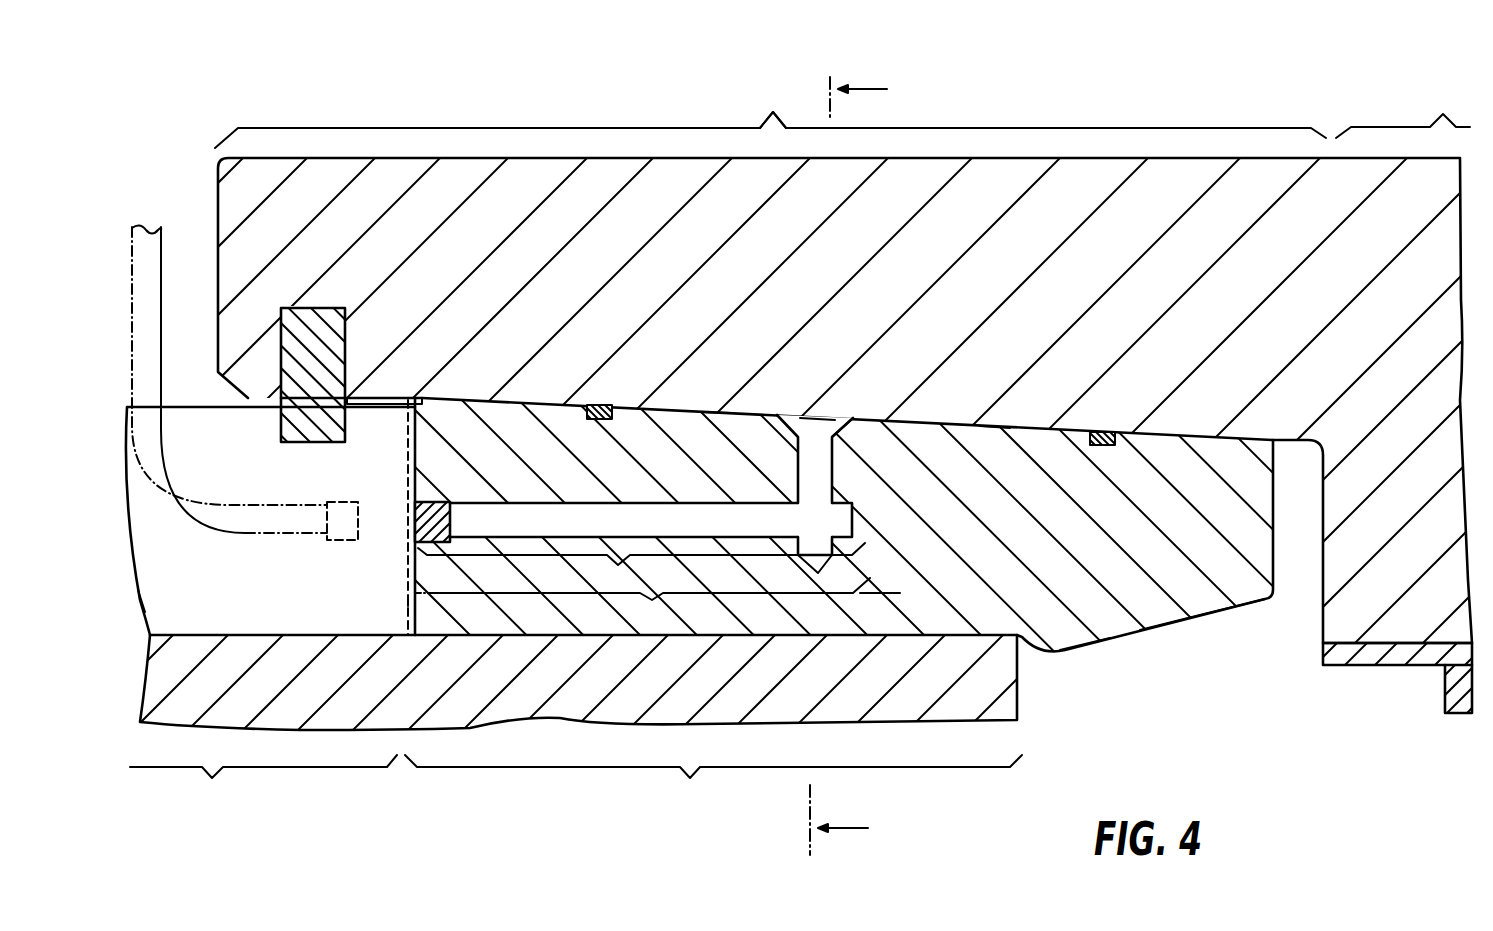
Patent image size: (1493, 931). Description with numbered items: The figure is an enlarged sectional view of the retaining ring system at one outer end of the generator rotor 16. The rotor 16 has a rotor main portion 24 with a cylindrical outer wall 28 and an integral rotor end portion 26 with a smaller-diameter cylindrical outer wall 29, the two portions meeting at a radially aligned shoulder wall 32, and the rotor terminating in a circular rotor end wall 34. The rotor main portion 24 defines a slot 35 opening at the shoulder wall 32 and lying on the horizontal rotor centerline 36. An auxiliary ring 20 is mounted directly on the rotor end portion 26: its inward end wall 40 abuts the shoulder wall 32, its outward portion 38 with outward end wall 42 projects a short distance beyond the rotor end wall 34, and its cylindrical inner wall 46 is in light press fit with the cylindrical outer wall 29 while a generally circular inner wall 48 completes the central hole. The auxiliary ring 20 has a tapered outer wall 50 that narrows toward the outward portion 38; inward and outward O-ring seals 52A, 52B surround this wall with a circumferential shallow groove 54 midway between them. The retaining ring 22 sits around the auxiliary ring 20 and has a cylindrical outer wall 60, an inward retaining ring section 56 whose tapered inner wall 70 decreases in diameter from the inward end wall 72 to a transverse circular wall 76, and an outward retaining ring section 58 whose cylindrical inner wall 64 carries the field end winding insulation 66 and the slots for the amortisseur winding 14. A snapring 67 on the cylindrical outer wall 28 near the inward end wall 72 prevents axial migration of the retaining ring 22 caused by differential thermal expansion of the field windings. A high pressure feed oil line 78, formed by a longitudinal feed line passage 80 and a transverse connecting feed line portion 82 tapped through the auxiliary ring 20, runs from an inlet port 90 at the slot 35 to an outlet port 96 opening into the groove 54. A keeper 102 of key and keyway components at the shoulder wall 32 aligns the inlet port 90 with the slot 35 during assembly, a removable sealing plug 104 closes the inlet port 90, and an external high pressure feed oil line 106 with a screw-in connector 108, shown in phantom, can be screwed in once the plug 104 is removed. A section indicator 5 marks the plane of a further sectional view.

The section line 5- 5 is at (860, 466).
The amortisseur winding 14 is at (1375, 665).
The rotor 16 is at (158, 672).
The auxiliary ring 20 is at (1087, 615).
The retaining ring 22 is at (1338, 283).
The rotor main portion 24 is at (263, 784).
The rotor end portion 26 is at (713, 784).
The cylindrical outer wall 28 is at (180, 400).
The cylindrical outer wall 29 is at (590, 637).
The shoulder wall 32 is at (415, 420).
The rotor end wall 34 is at (1024, 680).
The slot 35 is at (160, 588).
The rotor centerline 36 is at (878, 600).
The outward portion 38 is at (1165, 608).
The inward end wall 40 is at (420, 438).
The outward end wall 42 is at (1270, 565).
The cylindrical inner wall 46 is at (925, 632).
The circular inner wall 48 is at (1220, 615).
The tapered outer wall 50 is at (723, 415).
The inward O-ring seal 52A is at (600, 405).
The outward O-ring seal 52B is at (1105, 430).
The circumferential shallow groove 54 is at (817, 420).
The inward retaining ring section 56 is at (774, 107).
The outward retaining ring section 58 is at (1403, 112).
The cylindrical outer wall 60 is at (487, 158).
The cylindrical inner wall 64 is at (1415, 640).
The field end winding insulation 66 is at (1442, 700).
The snapring 67 is at (330, 305).
The tapered inner wall 70 is at (707, 412).
The inward end wall 72 is at (216, 210).
The circular wall 76 is at (1327, 540).
The high pressure feed oil line 78 is at (642, 602).
The longitudinal feed line passage 80 is at (641, 548).
The connecting feed line portion 82 is at (857, 425).
The inlet port 90 is at (412, 505).
The outlet port 96 is at (833, 427).
The keeper 102 is at (408, 603).
The removable sealing plug 104 is at (412, 540).
The external high pressure feed oil line 106 is at (148, 258).
The screw-in connector 108 is at (328, 540).